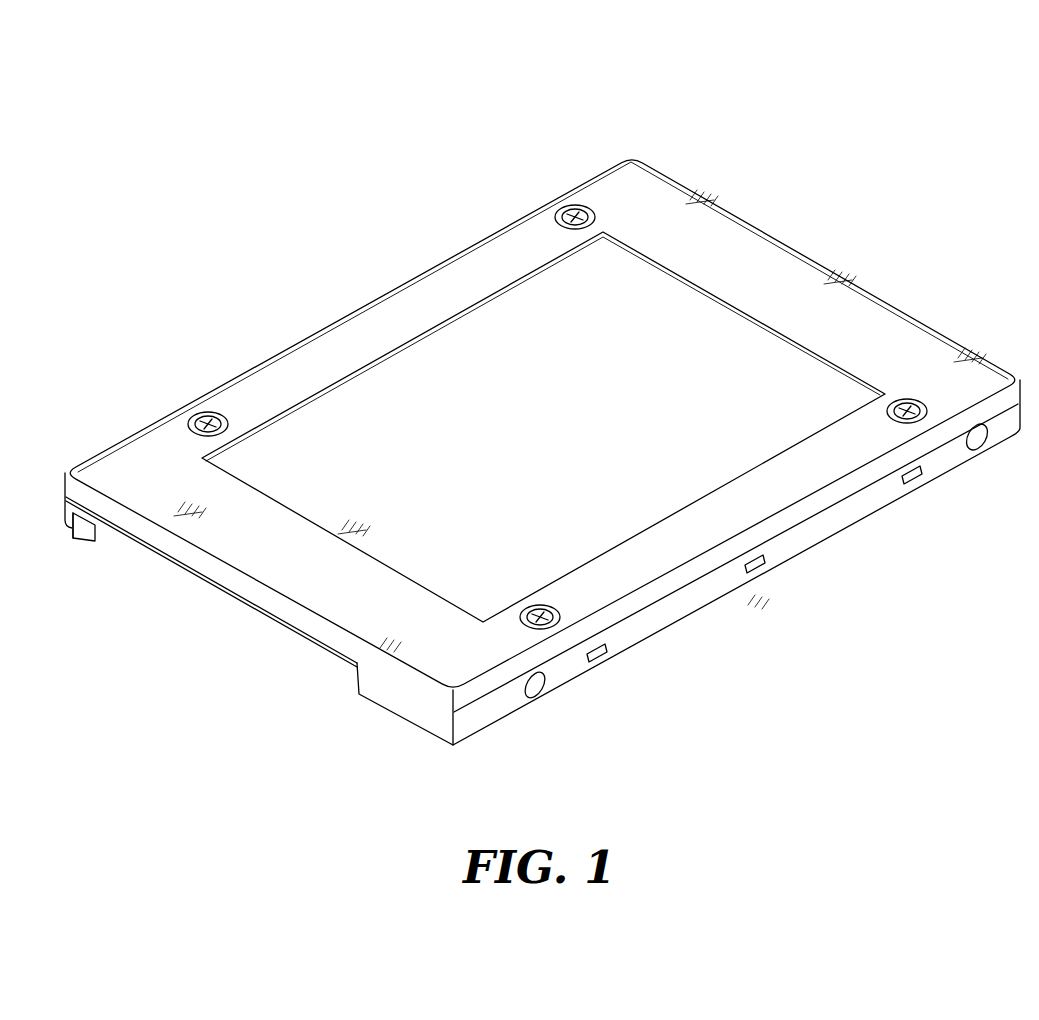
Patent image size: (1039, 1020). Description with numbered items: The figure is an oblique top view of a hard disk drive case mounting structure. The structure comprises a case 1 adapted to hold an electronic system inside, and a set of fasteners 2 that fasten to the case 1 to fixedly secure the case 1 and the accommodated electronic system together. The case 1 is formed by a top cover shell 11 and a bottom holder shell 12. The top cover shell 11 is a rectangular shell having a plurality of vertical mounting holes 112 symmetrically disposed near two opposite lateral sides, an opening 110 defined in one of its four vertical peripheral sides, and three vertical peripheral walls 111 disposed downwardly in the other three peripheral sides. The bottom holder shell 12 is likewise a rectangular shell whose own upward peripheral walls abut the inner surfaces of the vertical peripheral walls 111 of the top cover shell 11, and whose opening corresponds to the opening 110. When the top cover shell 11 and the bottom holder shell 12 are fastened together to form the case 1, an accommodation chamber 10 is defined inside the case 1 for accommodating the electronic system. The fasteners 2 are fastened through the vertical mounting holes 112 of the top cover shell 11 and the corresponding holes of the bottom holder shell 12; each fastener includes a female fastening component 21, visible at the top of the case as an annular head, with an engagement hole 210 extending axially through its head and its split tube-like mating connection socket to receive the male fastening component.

The case 1 is at (288, 327).
The fasteners 2 is at (582, 118).
The female fastening component 21 is at (575, 205).
The engagement hole 210 is at (907, 398).
The accommodation chamber 10 is at (170, 572).
The top cover shell 11 is at (135, 460).
The bottom holder shell 12 is at (93, 537).
The opening 110 is at (358, 672).
The vertical peripheral walls 111 is at (833, 528).
The vertical mounting holes 112 is at (206, 413).